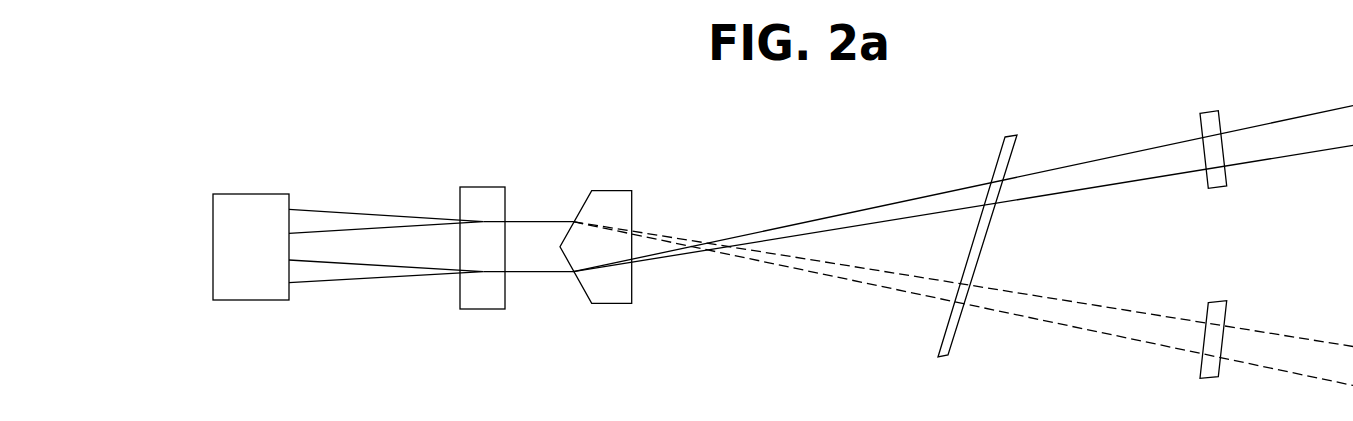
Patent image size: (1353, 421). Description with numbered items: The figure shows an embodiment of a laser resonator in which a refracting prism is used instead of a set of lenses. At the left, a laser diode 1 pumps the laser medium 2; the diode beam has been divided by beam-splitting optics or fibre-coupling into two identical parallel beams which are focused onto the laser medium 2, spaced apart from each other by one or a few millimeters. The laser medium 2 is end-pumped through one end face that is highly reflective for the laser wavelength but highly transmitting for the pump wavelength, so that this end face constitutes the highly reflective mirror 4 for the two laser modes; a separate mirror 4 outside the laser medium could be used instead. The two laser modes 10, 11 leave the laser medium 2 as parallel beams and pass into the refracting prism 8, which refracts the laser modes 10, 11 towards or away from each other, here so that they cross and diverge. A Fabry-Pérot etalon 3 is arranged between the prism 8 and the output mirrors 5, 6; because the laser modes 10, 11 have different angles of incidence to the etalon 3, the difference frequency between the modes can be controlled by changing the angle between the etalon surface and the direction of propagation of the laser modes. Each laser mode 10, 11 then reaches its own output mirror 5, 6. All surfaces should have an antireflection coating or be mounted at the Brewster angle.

The laser diode 1 is at (256, 193).
The laser medium 2 is at (486, 189).
The highly reflective mirror 4 is at (460, 200).
The refracting prism 8 is at (608, 196).
The laser mode 10 is at (850, 218).
The laser mode 11 is at (852, 277).
The Fabry-Pérot etalon 3 is at (998, 158).
The output mirror 5 is at (1220, 183).
The output mirror 6 is at (1220, 308).